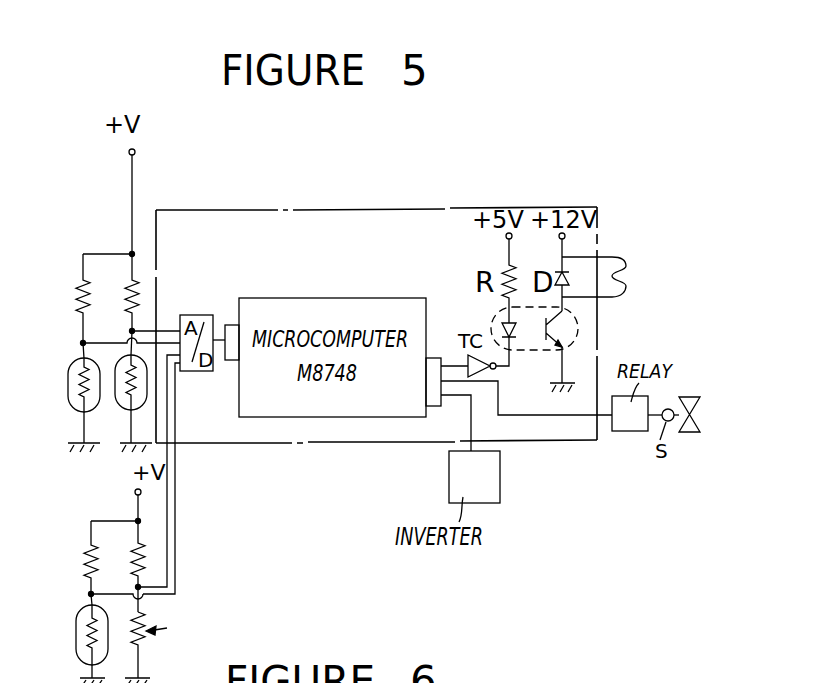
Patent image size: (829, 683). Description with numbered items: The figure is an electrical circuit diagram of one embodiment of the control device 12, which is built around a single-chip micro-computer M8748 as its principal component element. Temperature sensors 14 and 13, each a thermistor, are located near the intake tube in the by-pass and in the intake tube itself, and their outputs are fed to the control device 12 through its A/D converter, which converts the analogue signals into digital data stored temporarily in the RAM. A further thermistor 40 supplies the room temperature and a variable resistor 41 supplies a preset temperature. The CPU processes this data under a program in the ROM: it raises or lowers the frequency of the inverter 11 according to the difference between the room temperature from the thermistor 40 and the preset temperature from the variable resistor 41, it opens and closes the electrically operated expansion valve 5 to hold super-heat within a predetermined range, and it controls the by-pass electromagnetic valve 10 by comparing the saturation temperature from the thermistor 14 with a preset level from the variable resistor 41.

The electrically operated expansion valve 5 is at (624, 275).
The by-pass electromagnetic valve 10 is at (699, 420).
The inverter 11 is at (500, 462).
The control device 12 is at (399, 208).
The temperature sensor 13 is at (128, 412).
The temperature sensor 14 is at (68, 405).
The thermistor 40 is at (76, 645).
The variable resistor 41 is at (145, 635).